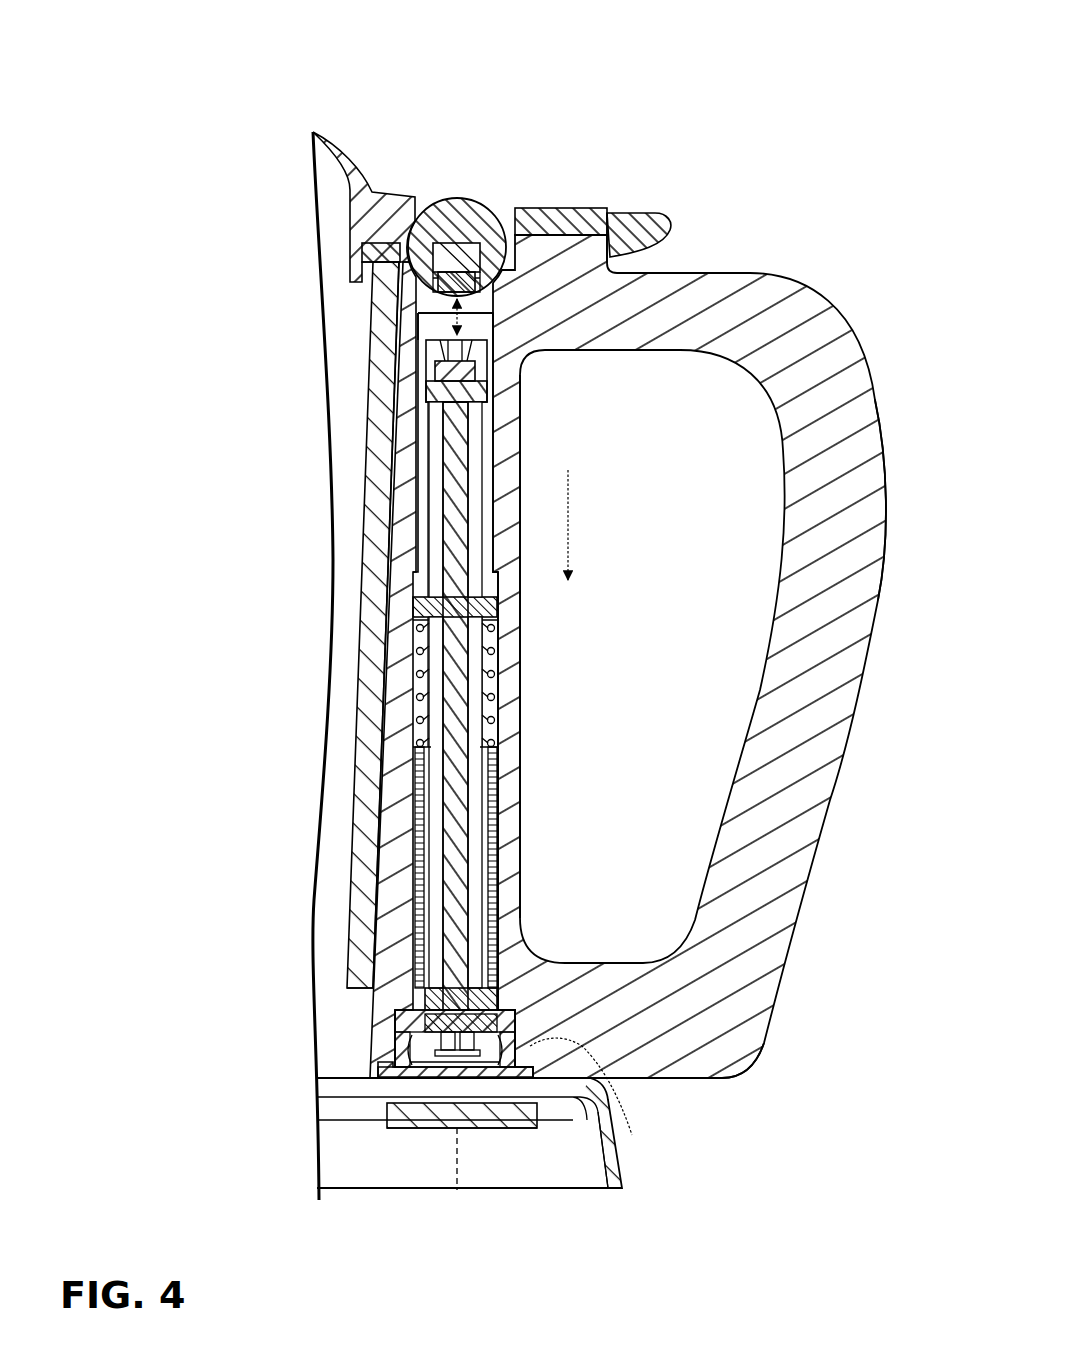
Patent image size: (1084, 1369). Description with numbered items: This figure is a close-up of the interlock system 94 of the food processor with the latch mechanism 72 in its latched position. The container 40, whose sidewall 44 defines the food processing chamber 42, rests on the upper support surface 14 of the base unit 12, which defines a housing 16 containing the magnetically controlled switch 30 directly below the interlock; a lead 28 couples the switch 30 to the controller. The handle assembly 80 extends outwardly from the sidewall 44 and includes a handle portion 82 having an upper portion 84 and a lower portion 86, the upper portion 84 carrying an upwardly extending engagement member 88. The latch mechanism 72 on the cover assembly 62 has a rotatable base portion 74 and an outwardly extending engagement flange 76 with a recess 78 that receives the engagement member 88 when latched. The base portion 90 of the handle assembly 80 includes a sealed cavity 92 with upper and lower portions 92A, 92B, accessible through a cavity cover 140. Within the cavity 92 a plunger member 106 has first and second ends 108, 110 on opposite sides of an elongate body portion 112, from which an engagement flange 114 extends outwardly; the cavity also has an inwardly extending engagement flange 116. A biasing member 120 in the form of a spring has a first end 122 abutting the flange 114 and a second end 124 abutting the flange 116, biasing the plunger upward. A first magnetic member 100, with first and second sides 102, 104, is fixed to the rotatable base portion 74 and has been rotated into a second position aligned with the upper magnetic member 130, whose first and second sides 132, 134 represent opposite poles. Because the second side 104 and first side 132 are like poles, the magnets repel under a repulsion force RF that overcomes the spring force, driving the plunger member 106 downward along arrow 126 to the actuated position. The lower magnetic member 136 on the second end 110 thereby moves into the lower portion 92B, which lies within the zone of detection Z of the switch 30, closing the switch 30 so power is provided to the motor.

The base unit 12 is at (640, 1163).
The upper support surface 14 is at (392, 1108).
The housing 16 is at (623, 1180).
The lead 28 is at (457, 1150).
The switch 30 is at (503, 1130).
The container 40 is at (368, 680).
The food processing chamber 42 is at (352, 372).
The sidewall 44 is at (378, 462).
The cover assembly 62 is at (333, 150).
The latch mechanism 72 is at (487, 105).
The rotatable base portion 74 is at (455, 215).
The engagement flange 76 is at (645, 232).
The recess 78 is at (505, 215).
The handle assembly 80 is at (800, 255).
The handle portion 82 is at (845, 385).
The upper portion 84 is at (718, 275).
The lower portion 86 is at (705, 1085).
The engagement member 88 is at (603, 240).
The base portion 90 is at (523, 557).
The sealed cavity 92 is at (498, 778).
The upper portion of sealed cavity 92A is at (415, 345).
The lower portion of sealed cavity 92B is at (505, 1000).
The interlock system 94 is at (527, 660).
The first magnetic member 100 is at (400, 250).
The first side 102 is at (432, 247).
The second side 104 is at (418, 276).
The plunger member 106 is at (458, 450).
The first end 108 is at (435, 393).
The second end 110 is at (360, 975).
The elongate body portion 112 is at (440, 518).
The engagement flange 114 is at (427, 608).
The engagement flange 116 is at (495, 790).
The biasing member 120 is at (420, 693).
The first end 122 is at (425, 622).
The second end 124 is at (430, 745).
The arrow 126 is at (570, 515).
The upper magnetic member 130 is at (483, 388).
The first side 132 is at (490, 372).
The second side 134 is at (476, 395).
The lower magnetic member 136 is at (395, 1025).
The cavity cover 140 is at (390, 1062).
The repulsion force RF is at (410, 300).
The zone of detection Z is at (612, 1085).